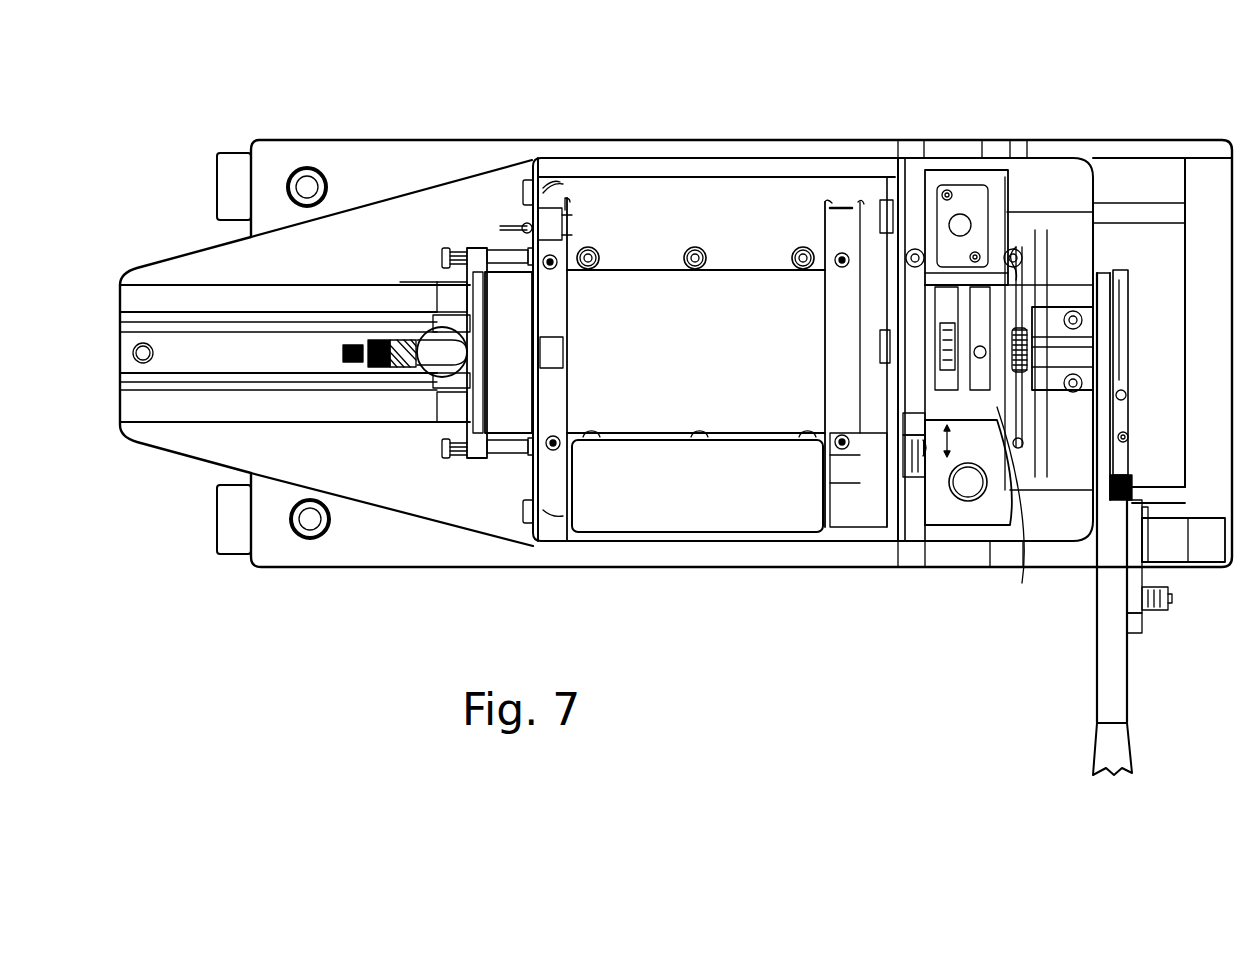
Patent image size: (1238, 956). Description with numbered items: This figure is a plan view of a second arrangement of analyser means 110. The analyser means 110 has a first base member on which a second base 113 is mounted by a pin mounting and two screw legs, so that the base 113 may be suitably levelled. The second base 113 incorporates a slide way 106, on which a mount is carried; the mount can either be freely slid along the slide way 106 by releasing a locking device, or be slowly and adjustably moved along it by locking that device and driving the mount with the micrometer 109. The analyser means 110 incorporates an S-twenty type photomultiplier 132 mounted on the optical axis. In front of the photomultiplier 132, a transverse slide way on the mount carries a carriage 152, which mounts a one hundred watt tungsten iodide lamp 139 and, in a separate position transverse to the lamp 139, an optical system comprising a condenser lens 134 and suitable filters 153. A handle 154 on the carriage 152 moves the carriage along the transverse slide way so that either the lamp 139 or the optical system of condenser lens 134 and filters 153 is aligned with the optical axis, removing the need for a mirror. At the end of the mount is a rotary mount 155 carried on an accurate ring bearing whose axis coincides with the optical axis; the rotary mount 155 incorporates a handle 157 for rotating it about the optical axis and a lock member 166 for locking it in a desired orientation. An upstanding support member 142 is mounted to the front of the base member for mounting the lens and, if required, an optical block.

The slide way 106 is at (158, 382).
The micrometer 109 is at (387, 353).
The analyser means 110 is at (480, 578).
The second base 113 is at (199, 444).
The photomultiplier 132 is at (711, 368).
The condenser lens 134 is at (918, 393).
The tungsten iodide lamp 139 is at (960, 213).
The upstanding support member 142 is at (1198, 493).
The carriage 152 is at (1013, 187).
The filters 153 is at (975, 410).
The handle 154 is at (963, 488).
The rotary mount 155 is at (1103, 273).
The handle 157 is at (1103, 745).
The lock member 166 is at (1007, 358).